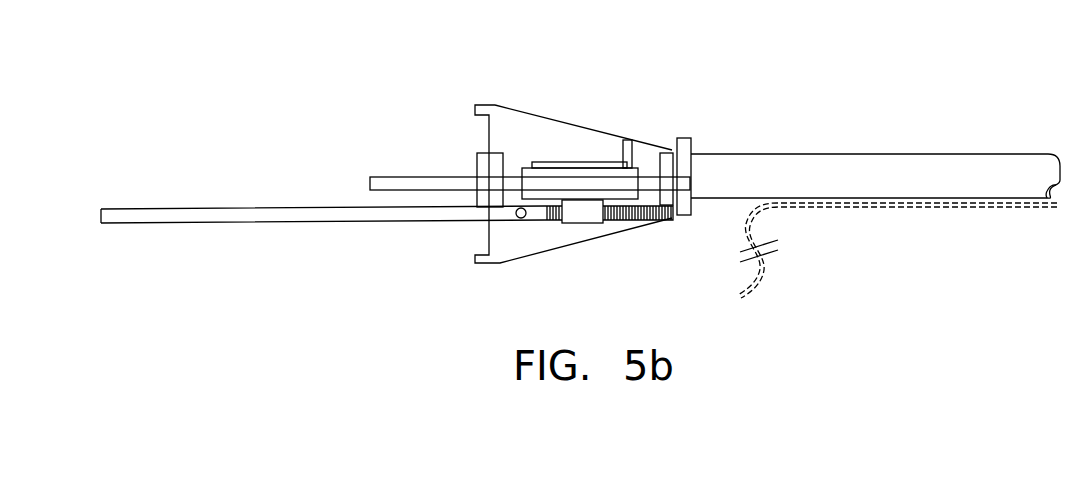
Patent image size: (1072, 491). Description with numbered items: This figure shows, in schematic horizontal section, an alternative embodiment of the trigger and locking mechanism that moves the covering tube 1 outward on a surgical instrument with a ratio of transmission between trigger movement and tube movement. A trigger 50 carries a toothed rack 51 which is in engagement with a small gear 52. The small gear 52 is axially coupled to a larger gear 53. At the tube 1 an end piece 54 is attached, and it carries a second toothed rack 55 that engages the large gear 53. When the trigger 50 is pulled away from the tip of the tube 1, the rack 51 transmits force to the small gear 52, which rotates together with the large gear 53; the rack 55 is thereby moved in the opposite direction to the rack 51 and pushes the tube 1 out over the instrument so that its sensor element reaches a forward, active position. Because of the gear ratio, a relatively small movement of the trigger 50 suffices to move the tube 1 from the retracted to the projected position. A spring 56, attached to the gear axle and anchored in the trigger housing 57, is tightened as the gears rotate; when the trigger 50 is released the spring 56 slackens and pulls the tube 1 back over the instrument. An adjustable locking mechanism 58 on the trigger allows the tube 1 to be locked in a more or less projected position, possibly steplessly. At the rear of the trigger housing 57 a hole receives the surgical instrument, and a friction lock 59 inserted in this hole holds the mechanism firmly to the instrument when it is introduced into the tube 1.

The tube 1 is at (857, 157).
The trigger 50 is at (182, 209).
The toothed rack 51 is at (663, 222).
The small gear 52 is at (588, 225).
The large gear 53 is at (532, 158).
The end piece 54 is at (693, 138).
The toothed rack 55 is at (376, 177).
The spring 56 is at (632, 135).
The trigger housing 57 is at (496, 103).
The adjustable locking mechanism 58 is at (523, 220).
The friction lock 59 is at (470, 155).